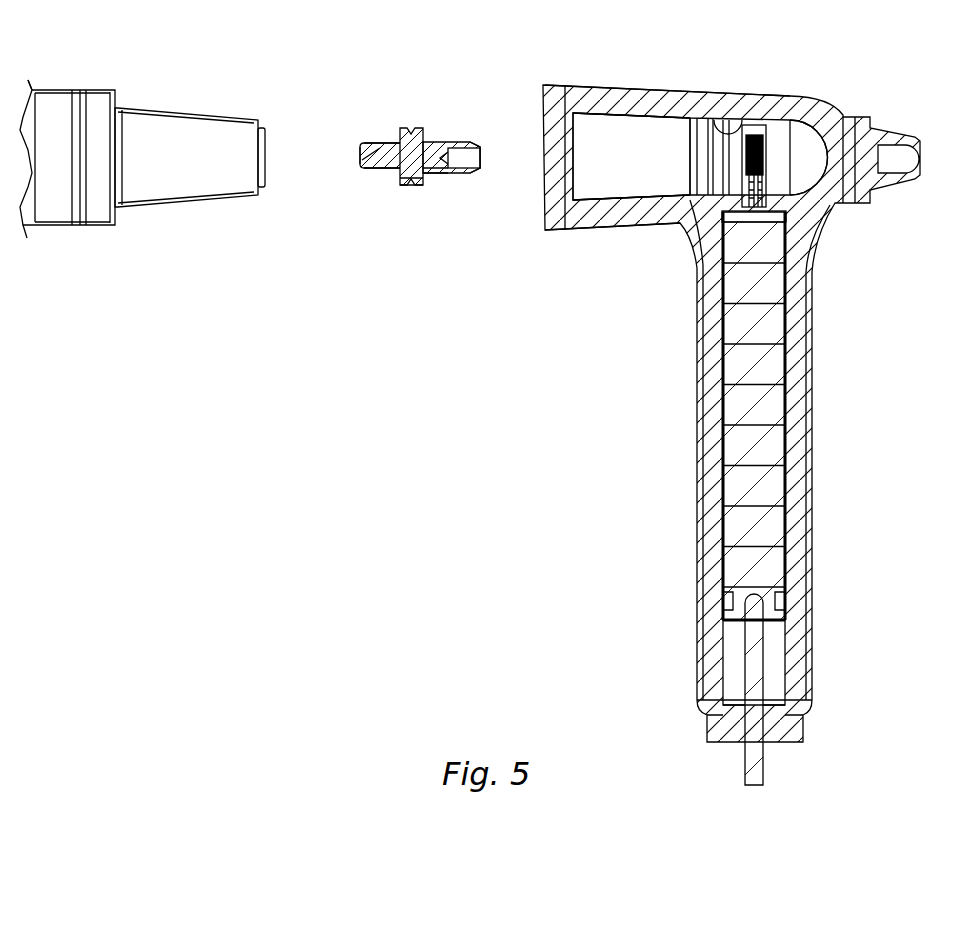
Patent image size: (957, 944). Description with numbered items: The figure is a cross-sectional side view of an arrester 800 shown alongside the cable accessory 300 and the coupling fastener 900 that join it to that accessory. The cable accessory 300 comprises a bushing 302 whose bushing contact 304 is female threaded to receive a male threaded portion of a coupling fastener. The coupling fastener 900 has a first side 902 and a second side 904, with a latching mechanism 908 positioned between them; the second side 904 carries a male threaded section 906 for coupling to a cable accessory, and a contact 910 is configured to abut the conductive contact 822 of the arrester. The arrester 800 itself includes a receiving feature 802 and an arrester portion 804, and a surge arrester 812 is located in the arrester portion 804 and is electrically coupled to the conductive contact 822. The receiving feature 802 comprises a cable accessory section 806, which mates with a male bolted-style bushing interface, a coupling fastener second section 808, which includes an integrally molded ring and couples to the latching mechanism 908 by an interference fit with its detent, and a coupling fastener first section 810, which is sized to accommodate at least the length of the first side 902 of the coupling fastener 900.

The cable accessory 300 is at (187, 90).
The bushing 302 is at (230, 125).
The bushing contact 304 is at (262, 186).
The coupling fastener 900 is at (435, 103).
The first side 902 is at (477, 133).
The second side 904 is at (373, 133).
The male threaded section 906 is at (372, 165).
The latching mechanism 908 is at (413, 190).
The contact 910 is at (430, 177).
The arrester 800 is at (897, 95).
The receiving feature 802 is at (673, 115).
The arrester portion 804 is at (790, 537).
The cable accessory section 806 is at (618, 152).
The coupling fastener second section 808 is at (730, 145).
The coupling fastener first section 810 is at (797, 147).
The surge arrester 812 is at (760, 416).
The conductive contact 822 is at (758, 122).